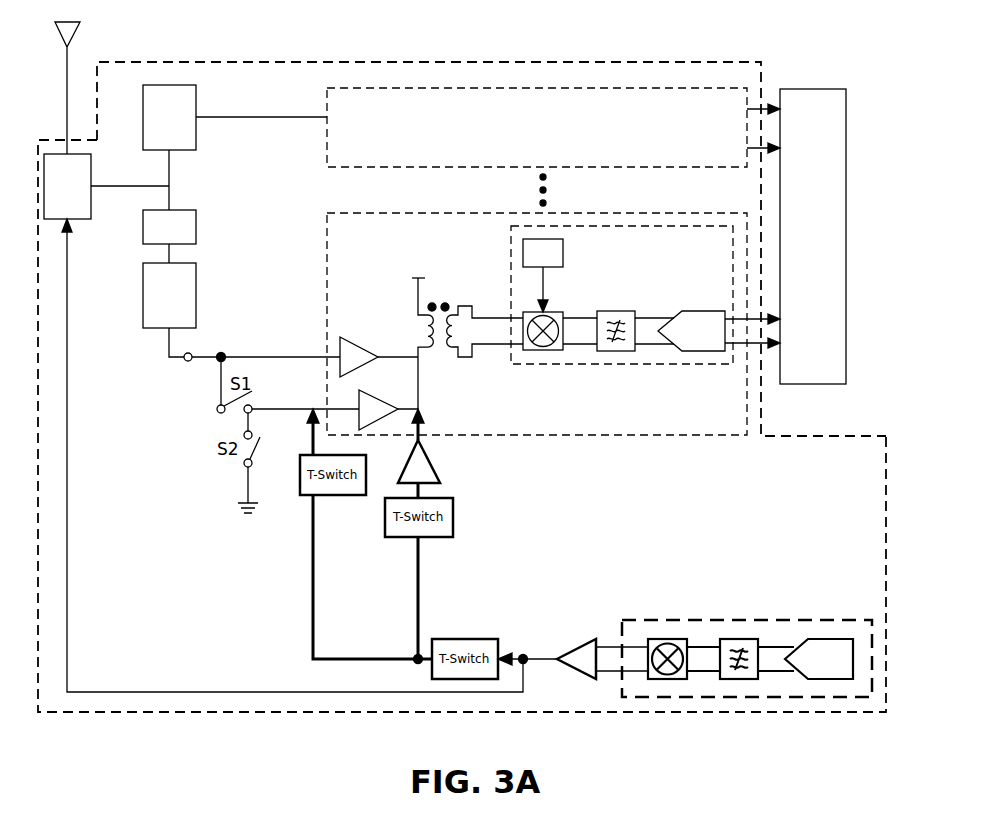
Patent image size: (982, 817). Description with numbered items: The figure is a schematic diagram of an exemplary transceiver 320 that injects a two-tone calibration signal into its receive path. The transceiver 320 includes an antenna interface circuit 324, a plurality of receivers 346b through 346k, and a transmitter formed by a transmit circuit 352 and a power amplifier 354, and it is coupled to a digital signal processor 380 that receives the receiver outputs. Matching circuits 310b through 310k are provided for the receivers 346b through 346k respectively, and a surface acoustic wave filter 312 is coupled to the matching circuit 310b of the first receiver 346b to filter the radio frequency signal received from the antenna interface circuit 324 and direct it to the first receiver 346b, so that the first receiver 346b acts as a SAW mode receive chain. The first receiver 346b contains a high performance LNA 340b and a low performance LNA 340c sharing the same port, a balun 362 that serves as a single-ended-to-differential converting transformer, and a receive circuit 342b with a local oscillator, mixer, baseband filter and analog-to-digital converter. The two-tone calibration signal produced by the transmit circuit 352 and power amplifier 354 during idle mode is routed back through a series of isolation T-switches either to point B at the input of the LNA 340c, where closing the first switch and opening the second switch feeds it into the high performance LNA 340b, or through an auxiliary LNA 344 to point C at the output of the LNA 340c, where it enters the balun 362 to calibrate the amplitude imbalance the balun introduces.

The antenna interface circuit 324 is at (67, 186).
The matching circuit 310k is at (169, 117).
The surface acoustic wave (SAW) filter 312 is at (169, 227).
The matching circuit 310b is at (169, 295).
The receiver 346k is at (553, 127).
The first receiver 346b is at (544, 324).
The LNA 340b is at (362, 344).
The LNA 340c is at (384, 401).
The balun 362 is at (470, 314).
The receive circuit 342b is at (645, 295).
The digital signal processor 380 is at (813, 236).
The auxiliary LNA 344 is at (435, 446).
The transceiver 320 is at (462, 426).
The power amplifier 354 is at (576, 642).
The transmit circuit 352 is at (747, 639).